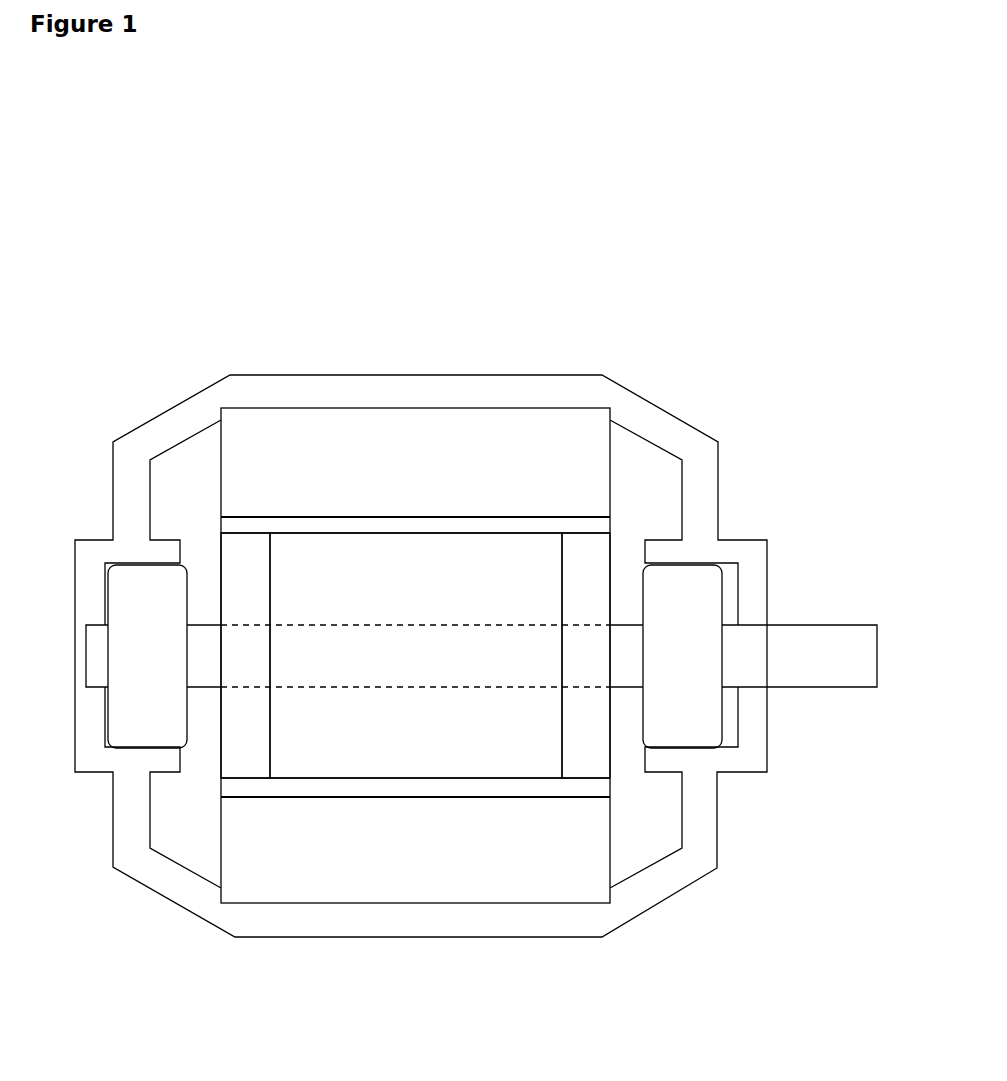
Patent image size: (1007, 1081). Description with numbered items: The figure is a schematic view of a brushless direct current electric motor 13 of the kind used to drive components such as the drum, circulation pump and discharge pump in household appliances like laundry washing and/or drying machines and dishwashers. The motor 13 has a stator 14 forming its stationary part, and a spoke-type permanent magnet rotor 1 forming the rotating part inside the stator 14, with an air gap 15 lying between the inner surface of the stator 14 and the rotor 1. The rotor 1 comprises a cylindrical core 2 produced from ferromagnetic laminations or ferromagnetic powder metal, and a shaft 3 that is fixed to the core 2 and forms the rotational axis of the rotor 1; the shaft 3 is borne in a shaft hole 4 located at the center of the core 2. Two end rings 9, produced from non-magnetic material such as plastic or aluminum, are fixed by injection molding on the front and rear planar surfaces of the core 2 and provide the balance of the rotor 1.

The rotor 1 is at (414, 591).
The core 2 is at (323, 560).
The shaft 3 is at (826, 640).
The shaft hole 4 is at (498, 618).
The end ring 9 is at (245, 562).
The motor 13 is at (383, 250).
The stator 14 is at (393, 420).
The air gap 15 is at (493, 518).